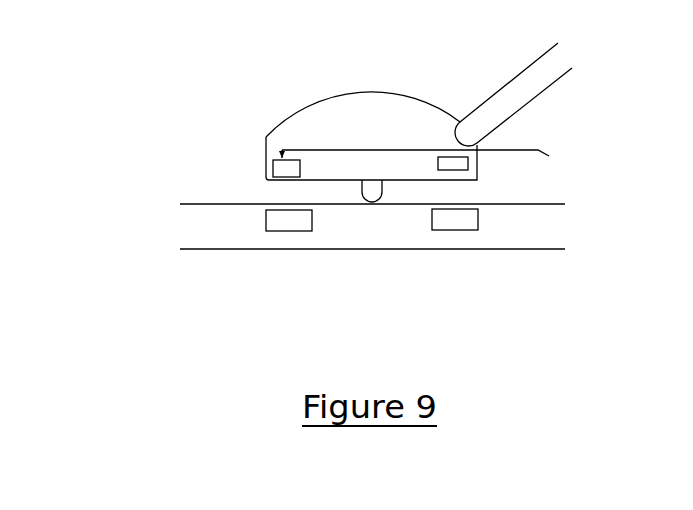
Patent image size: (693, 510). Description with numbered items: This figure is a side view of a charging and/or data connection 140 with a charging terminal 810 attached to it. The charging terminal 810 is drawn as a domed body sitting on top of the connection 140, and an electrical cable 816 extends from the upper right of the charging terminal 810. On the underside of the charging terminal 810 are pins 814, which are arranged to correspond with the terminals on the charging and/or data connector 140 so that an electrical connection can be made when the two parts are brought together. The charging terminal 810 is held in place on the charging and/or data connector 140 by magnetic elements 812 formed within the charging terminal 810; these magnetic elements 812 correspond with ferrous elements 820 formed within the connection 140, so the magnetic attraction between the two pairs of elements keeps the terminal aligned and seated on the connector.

The charging terminal 810 is at (283, 123).
The magnetic elements 812 is at (469, 163).
The pins 814 is at (384, 187).
The electrical cable 816 is at (529, 88).
The charging and/or data connection 140 is at (194, 228).
The ferrous elements 820 is at (442, 232).